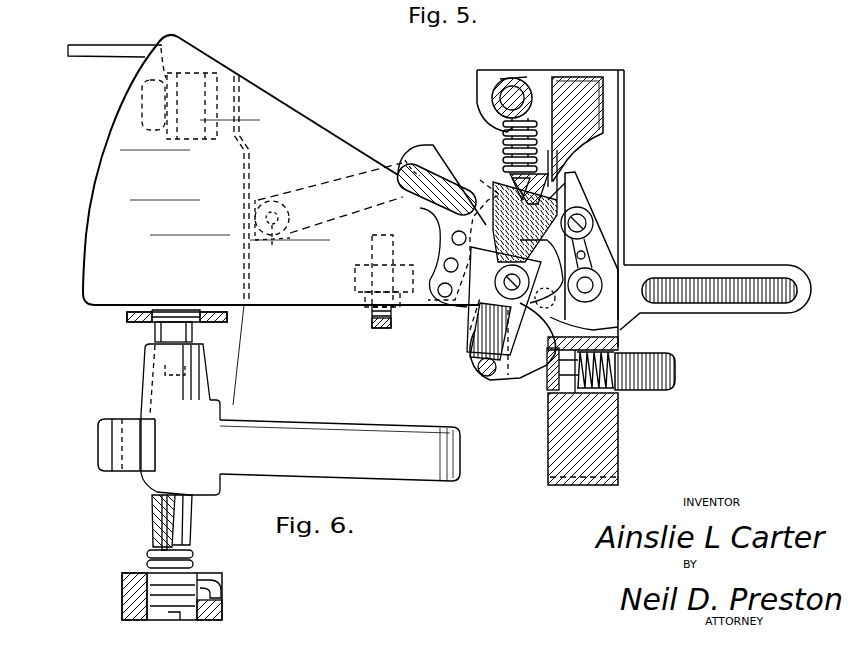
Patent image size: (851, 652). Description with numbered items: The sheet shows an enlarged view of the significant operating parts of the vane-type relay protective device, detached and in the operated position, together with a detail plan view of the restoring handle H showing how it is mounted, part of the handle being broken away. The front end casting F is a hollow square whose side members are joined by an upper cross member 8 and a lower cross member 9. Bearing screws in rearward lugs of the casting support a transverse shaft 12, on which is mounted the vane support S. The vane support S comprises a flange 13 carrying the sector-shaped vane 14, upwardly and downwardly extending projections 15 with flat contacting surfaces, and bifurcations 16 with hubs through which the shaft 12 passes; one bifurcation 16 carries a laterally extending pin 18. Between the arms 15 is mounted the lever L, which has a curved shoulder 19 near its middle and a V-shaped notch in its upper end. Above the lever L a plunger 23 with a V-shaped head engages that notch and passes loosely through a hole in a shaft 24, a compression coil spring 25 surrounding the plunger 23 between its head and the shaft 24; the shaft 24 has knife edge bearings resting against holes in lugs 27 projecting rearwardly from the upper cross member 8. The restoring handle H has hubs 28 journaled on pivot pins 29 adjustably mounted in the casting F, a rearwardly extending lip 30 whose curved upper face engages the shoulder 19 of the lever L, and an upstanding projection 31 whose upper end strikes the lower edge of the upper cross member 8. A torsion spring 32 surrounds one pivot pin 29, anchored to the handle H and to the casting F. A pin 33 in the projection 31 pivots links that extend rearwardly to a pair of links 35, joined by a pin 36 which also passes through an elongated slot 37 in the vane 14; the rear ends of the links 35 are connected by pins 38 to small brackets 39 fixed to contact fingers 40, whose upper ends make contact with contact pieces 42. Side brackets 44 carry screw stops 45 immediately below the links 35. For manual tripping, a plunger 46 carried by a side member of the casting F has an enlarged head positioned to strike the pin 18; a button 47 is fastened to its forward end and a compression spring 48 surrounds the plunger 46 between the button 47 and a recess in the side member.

In FIG. 5, the upper cross member 8 is at (600, 110).
In FIG. 5, the lower cross member 9 is at (617, 443).
In FIG. 5, the transverse pin or shaft 12 is at (497, 281).
In FIG. 5, the flange 13 is at (449, 226).
In FIG. 5, the sector-shaped vane 14 is at (274, 220).
In FIG. 5, the upwardly and downwardly extending projections 15 is at (523, 222).
In FIG. 5, the bifurcations 16 is at (513, 339).
In FIG. 5, the laterally extending pin 18 is at (482, 375).
In FIG. 5, the curved shoulder 19 is at (541, 271).
In FIG. 5, the plunger 23 is at (508, 147).
In FIG. 5, the shaft 24 is at (522, 85).
In FIG. 5, the compression coil spring 25 is at (519, 182).
In FIG. 5, the lugs 27 is at (483, 102).
In FIG. 5, the hubs or bosses 28 is at (600, 275).
In FIG. 6, the hubs or bosses 28 is at (197, 367).
In FIG. 6, the pivot pins 29 is at (195, 328).
In FIG. 5, the rearwardly extending lip or lug 30 is at (545, 298).
In FIG. 6, the rearwardly extending lip or lug 30 is at (125, 465).
In FIG. 5, the upstanding projecting portion 31 is at (584, 205).
In FIG. 6, the upstanding projecting portion 31 is at (148, 428).
In FIG. 6, the torsion spring 32 is at (210, 576).
In FIG. 5, the pin 33 is at (591, 214).
In FIG. 5, the links 35 is at (330, 198).
In FIG. 5, the pin 36 is at (418, 168).
In FIG. 5, the elongated slot 37 is at (448, 170).
In FIG. 5, the pins 38 is at (272, 229).
In FIG. 5, the small brackets 39 is at (272, 204).
In FIG. 5, the contact fingers 40 is at (244, 190).
In FIG. 5, the contact pieces 42 is at (179, 106).
In FIG. 5, the side brackets 44 is at (355, 283).
In FIG. 5, the screw stops 45 is at (372, 321).
In FIG. 5, the plunger 46 is at (548, 382).
In FIG. 5, the button 47 is at (676, 382).
In FIG. 5, the compression spring 48 is at (612, 386).
In FIG. 5, the front end casting F is at (614, 162).
In FIG. 6, the front end casting F is at (127, 317).
In FIG. 5, the restoring handle H is at (692, 265).
In FIG. 6, the restoring handle H is at (316, 430).
In FIG. 5, the vane support S is at (466, 338).
In FIG. 5, the lever L is at (478, 360).